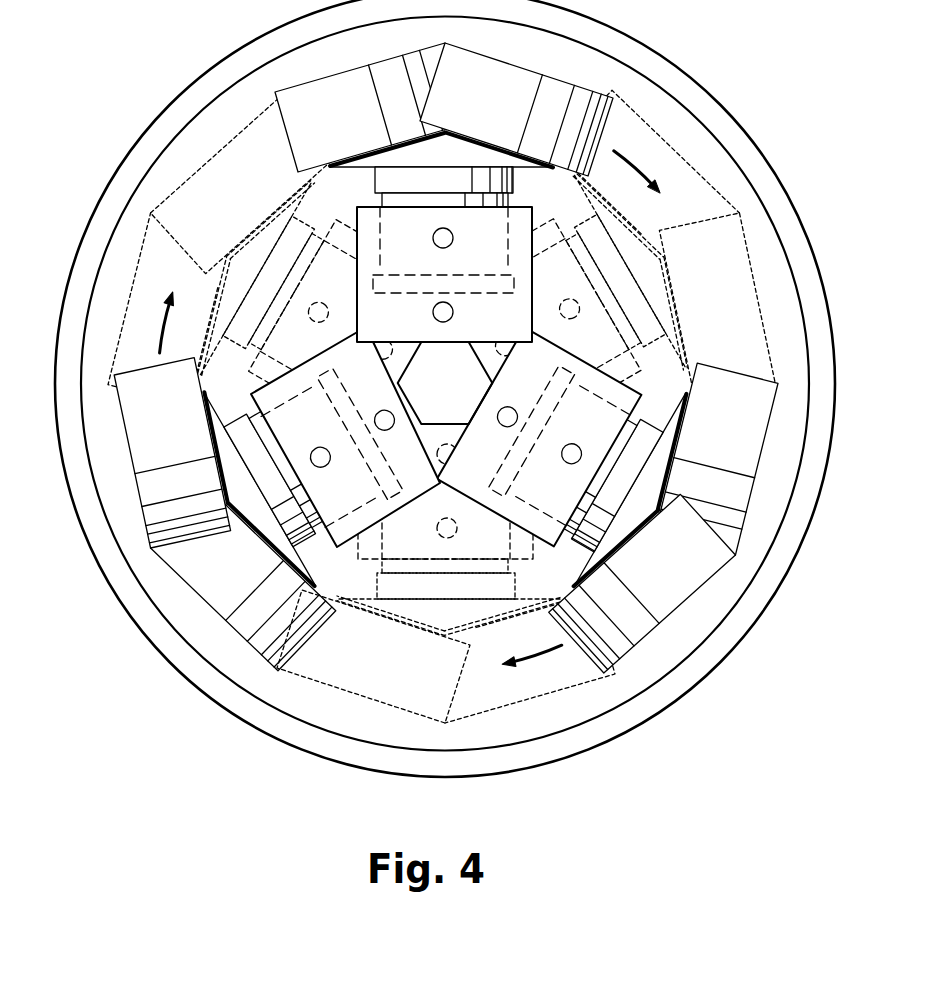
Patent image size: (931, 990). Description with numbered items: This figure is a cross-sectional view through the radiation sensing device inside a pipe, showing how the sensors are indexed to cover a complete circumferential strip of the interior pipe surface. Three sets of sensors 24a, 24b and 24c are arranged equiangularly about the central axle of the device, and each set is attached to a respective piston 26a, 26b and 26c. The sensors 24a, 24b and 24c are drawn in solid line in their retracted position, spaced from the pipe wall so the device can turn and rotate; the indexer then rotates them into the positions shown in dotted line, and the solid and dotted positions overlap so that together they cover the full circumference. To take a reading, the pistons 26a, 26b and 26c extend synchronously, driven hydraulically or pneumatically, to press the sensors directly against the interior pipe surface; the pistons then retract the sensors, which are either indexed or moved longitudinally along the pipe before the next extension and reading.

The sensor set 24a is at (517, 87).
The sensor set 24b is at (688, 582).
The sensor set 24c is at (173, 257).
The piston 26a is at (497, 271).
The piston 26b is at (605, 431).
The piston 26c is at (364, 496).